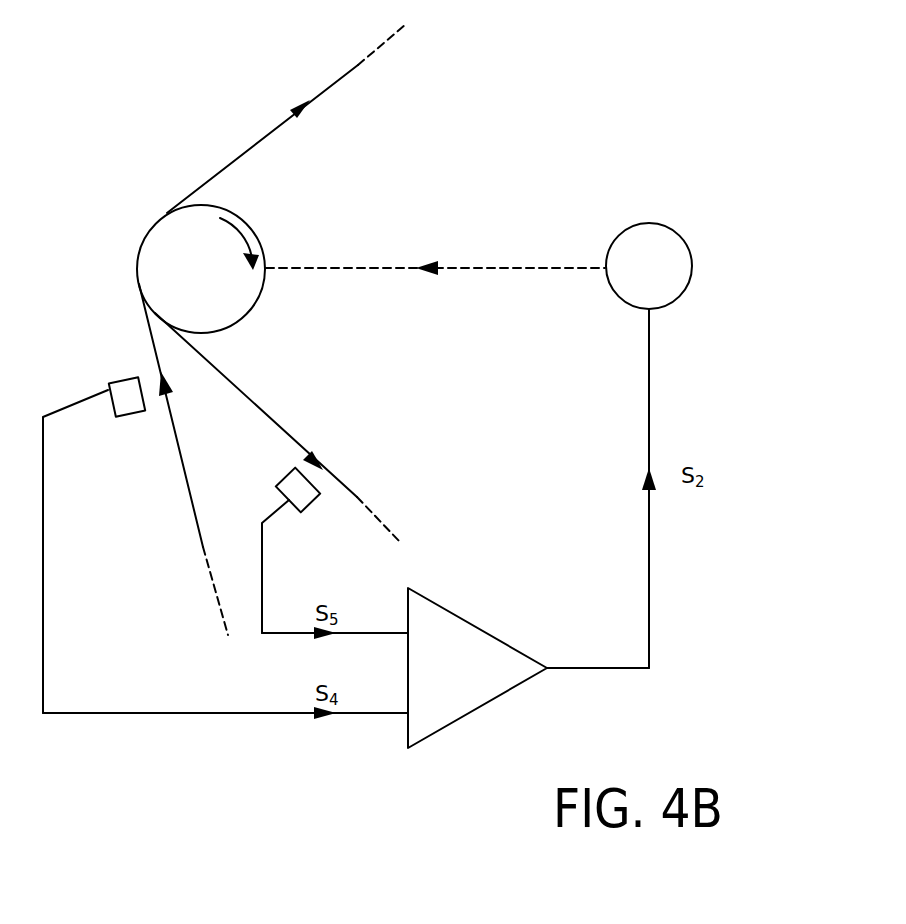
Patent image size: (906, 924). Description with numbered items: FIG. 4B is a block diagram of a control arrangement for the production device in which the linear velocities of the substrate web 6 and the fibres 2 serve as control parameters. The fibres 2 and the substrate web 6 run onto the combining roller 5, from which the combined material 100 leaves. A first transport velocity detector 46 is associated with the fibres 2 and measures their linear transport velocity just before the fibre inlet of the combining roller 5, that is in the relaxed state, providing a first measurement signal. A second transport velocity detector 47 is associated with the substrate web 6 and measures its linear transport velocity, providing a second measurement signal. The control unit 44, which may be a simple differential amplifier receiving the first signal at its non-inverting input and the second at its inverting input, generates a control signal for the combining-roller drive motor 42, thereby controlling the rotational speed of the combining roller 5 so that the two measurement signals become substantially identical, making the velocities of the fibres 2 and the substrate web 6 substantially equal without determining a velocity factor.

The web 100 is at (275, 128).
The combining roller 5 is at (235, 213).
The combining-roller drive motor 42 is at (677, 232).
The control unit 44 is at (473, 623).
The first transport velocity detector 46 is at (133, 418).
The second transport velocity detector 47 is at (312, 503).
The fibres 2 is at (193, 512).
The substrate web 6 is at (272, 418).